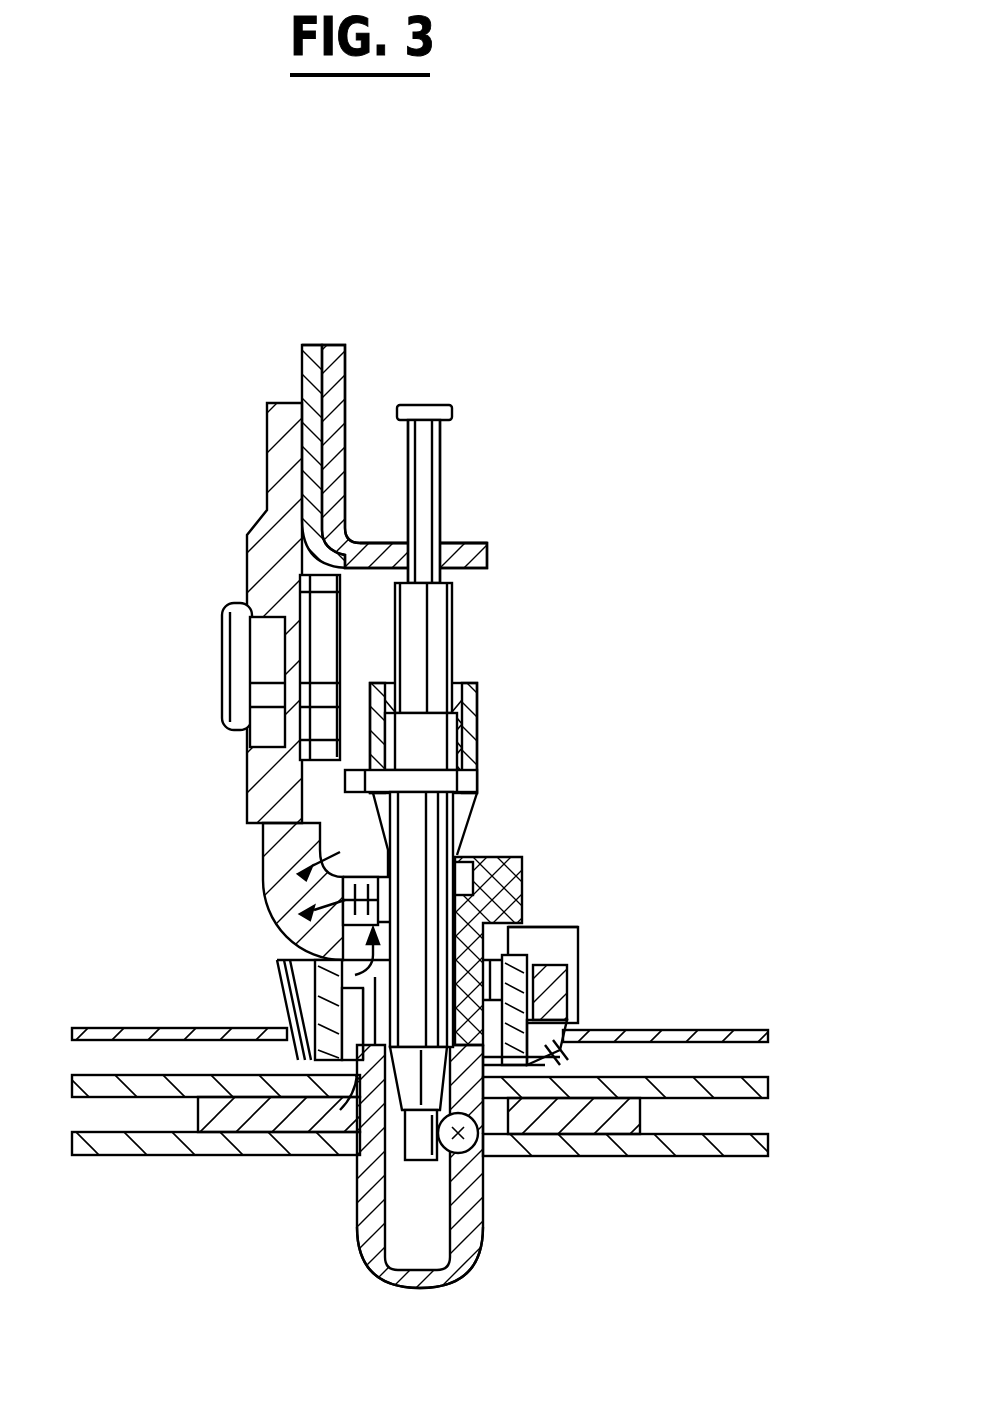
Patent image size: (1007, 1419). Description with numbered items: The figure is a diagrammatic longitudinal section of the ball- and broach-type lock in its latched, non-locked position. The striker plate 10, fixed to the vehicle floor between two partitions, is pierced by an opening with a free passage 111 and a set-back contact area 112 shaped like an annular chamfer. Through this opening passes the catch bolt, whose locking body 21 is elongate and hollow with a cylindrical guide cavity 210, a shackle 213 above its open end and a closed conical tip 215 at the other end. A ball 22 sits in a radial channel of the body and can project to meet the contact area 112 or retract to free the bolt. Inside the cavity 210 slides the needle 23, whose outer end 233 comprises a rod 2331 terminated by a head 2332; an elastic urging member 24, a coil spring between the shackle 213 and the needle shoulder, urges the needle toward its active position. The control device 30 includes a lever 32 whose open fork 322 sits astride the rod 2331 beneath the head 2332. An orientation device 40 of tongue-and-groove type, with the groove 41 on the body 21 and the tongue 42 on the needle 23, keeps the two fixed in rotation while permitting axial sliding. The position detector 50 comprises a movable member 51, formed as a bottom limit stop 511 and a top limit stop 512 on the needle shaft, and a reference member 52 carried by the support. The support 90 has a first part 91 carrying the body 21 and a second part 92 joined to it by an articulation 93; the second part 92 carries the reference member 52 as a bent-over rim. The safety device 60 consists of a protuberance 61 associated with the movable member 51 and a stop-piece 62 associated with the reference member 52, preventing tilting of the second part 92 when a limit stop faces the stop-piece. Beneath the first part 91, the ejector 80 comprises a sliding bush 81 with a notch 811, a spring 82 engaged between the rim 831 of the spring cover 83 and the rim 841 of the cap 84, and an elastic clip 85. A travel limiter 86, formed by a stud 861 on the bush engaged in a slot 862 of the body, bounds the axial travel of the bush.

The striker plate 10 is at (225, 1120).
The free passage 111 is at (340, 1118).
The contact area 112 is at (355, 1117).
The locking body 21 is at (420, 890).
The cylindrical guide cavity 210 is at (425, 1205).
The shackle 213 is at (478, 690).
The tip 215 is at (405, 1280).
The ball 22 is at (490, 1157).
The needle 23 is at (445, 650).
The outer end 233 is at (614, 345).
The rod 2331 is at (428, 468).
The head 2332 is at (447, 405).
The elastic urging member 24 is at (480, 713).
The control device 30 is at (353, 423).
The lever 32 is at (343, 412).
The open fork 322 is at (440, 545).
The orientation device 40 is at (776, 703).
The groove 41 is at (373, 977).
The tongue 42 is at (490, 865).
The position detector 50 is at (143, 913).
The movable member 51 is at (310, 985).
The bottom limit stop 511 is at (378, 876).
The top limit stop 512 is at (390, 760).
The reference member 52 is at (415, 922).
The safety device 60 is at (143, 830).
The protuberance 61 is at (355, 897).
The stop-piece 62 is at (335, 880).
The ejector 80 is at (682, 820).
The sliding bush 81 is at (495, 880).
The notch 811 is at (350, 1012).
The spring 82 is at (575, 1020).
The spring cover 83 is at (540, 930).
The rim 831 is at (518, 930).
The cap 84 is at (565, 985).
The rim 841 is at (545, 1055).
The elastic clip 85 is at (575, 1040).
The travel limiter 86 is at (769, 1180).
The stud 861 is at (513, 1077).
The slot 862 is at (493, 1077).
The support 90 is at (131, 603).
The first part 91 is at (267, 782).
The second part 92 is at (300, 760).
The articulation 93 is at (233, 635).